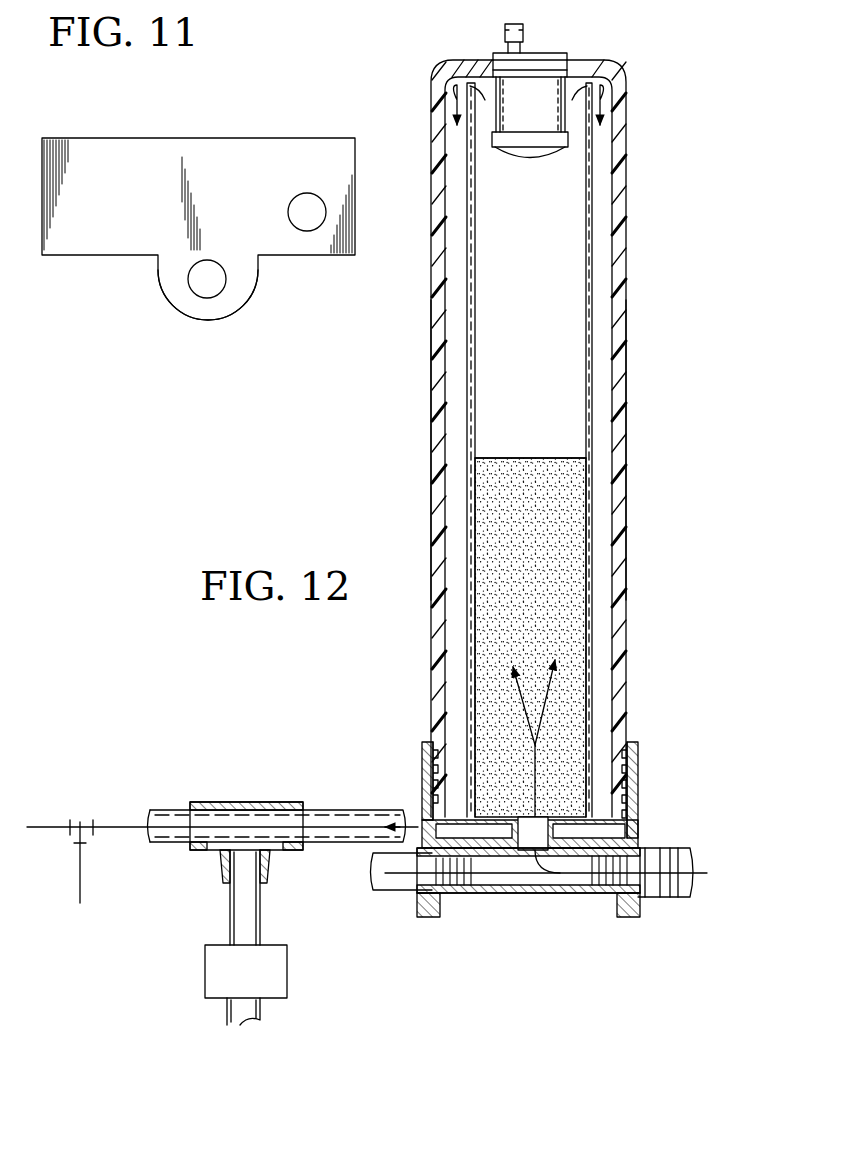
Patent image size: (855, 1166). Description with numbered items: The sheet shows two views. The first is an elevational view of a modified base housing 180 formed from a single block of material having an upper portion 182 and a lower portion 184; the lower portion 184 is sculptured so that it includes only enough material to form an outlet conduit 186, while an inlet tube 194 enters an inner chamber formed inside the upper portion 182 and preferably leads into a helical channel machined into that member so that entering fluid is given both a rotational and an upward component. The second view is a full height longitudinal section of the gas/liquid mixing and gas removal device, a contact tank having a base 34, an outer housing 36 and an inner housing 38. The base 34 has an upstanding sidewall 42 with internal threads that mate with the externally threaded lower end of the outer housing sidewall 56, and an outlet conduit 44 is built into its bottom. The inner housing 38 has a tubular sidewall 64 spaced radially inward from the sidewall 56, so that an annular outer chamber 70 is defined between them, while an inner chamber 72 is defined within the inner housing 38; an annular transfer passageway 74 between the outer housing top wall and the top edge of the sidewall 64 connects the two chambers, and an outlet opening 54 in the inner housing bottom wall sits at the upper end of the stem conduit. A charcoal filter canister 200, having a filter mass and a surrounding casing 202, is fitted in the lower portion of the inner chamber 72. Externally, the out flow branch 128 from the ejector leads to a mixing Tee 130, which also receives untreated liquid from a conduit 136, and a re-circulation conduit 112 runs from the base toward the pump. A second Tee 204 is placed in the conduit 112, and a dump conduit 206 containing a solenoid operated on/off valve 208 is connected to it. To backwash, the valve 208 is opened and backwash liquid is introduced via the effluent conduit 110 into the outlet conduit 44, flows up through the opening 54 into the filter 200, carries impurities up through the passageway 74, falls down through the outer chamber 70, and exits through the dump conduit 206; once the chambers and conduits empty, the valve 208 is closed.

In FIG. 12, the base 34 is at (660, 782).
In FIG. 12, the outer housing 36 is at (430, 678).
In FIG. 12, the inner housing 38 is at (600, 312).
In FIG. 12, the sidewall 42 is at (417, 774).
In FIG. 12, the outlet conduit 44 is at (510, 877).
In FIG. 12, the outlet opening 54 is at (530, 848).
In FIG. 12, the sidewall 56 is at (432, 432).
In FIG. 12, the tubular sidewall 64 is at (586, 386).
In FIG. 12, the outer chamber 70 is at (604, 192).
In FIG. 12, the inner chamber 72 is at (572, 281).
In FIG. 12, the transfer passageway 74 is at (462, 77).
In FIG. 12, the effluent conduit 110 is at (662, 880).
In FIG. 12, the re-circulation conduit 112 is at (178, 808).
In FIG. 12, the out flow branch 128 is at (44, 822).
In FIG. 12, the mixing Tee 130 is at (82, 822).
In FIG. 12, the conduit 136 is at (82, 875).
In FIG. 11, the base housing 180 is at (65, 240).
In FIG. 11, the upper portion 182 is at (78, 170).
In FIG. 11, the lower portion 184 is at (178, 298).
In FIG. 11, the outlet conduit 186 is at (213, 284).
In FIG. 11, the inlet tube 194 is at (310, 212).
In FIG. 12, the charcoal filter canister 200 is at (570, 514).
In FIG. 12, the casing 202 is at (586, 590).
In FIG. 12, the second Tee 204 is at (215, 862).
In FIG. 12, the dump conduit 206 is at (262, 1015).
In FIG. 12, the solenoid operated on/off valve 208 is at (204, 960).